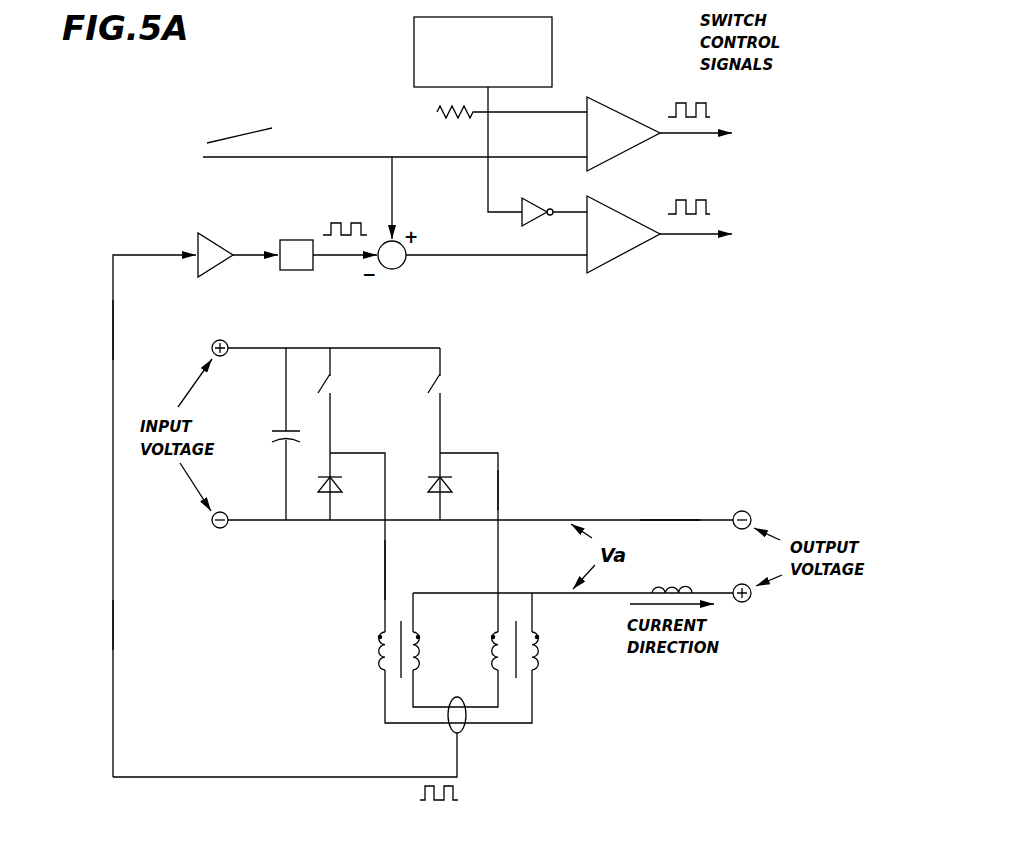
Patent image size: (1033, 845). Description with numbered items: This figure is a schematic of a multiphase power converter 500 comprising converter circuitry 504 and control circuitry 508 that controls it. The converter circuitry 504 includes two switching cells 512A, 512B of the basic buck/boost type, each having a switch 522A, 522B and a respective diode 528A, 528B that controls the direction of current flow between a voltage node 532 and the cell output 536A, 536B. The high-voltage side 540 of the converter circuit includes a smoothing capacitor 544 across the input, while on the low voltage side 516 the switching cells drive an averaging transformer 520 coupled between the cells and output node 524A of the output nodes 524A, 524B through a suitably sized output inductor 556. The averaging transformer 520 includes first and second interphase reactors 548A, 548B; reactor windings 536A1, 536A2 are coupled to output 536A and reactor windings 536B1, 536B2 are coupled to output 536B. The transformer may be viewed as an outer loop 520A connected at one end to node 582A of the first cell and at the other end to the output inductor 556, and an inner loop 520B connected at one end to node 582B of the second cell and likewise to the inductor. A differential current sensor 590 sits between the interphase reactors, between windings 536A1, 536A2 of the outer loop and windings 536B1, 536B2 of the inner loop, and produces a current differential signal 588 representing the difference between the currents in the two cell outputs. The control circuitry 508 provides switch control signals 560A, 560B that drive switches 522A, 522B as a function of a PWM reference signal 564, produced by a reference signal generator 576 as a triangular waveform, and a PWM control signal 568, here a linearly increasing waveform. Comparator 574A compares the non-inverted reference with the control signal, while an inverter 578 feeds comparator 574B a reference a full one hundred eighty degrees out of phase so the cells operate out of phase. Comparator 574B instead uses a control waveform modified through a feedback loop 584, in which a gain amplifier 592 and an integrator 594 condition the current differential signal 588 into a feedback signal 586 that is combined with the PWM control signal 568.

The multiphase power converter 500 is at (93, 211).
The converter circuitry 504 is at (649, 431).
The control circuitry 508 is at (613, 330).
The switching cell 512A is at (326, 336).
The switching cell 512B is at (452, 335).
The low voltage side 516 is at (702, 713).
The averaging transformer 520 is at (438, 686).
The outer loop 520A is at (351, 687).
The inner loop 520B is at (585, 700).
The switch 522A is at (334, 370).
The switch 522B is at (447, 373).
The output node 524A is at (750, 602).
The output node 524B is at (745, 511).
The diode 528A is at (318, 485).
The diode 528B is at (440, 488).
The voltage node 532 is at (678, 520).
The output of switching cell 536A is at (383, 562).
The reactor winding 536A1 is at (382, 640).
The reactor winding 536A2 is at (538, 652).
The output of switching cell 536B is at (500, 489).
The reactor winding 536B1 is at (413, 672).
The reactor winding 536B2 is at (508, 692).
The high-voltage side 540 is at (187, 584).
The smoothing capacitor 544 is at (276, 430).
The interphase reactor 548A is at (400, 609).
The interphase reactor 548B is at (517, 575).
The output inductor 556 is at (670, 580).
The switch control signal 560A is at (705, 110).
The switch control signal 560B is at (698, 200).
The PWM reference signal 564 is at (437, 112).
The PWM control signal 568 is at (247, 132).
The comparator 574A is at (620, 110).
The comparator 574B is at (633, 248).
The reference signal generator 576 is at (553, 42).
The inverter 578 is at (537, 201).
The node of switching cell 582A is at (341, 447).
The node of switching cell 582B is at (463, 448).
The feedback loop 584 is at (110, 334).
The feedback signal 586 is at (333, 223).
The current differential signal 588 is at (422, 791).
The differential current sensor 590 is at (467, 738).
The gain amplifier 592 is at (198, 237).
The integrator 594 is at (293, 240).